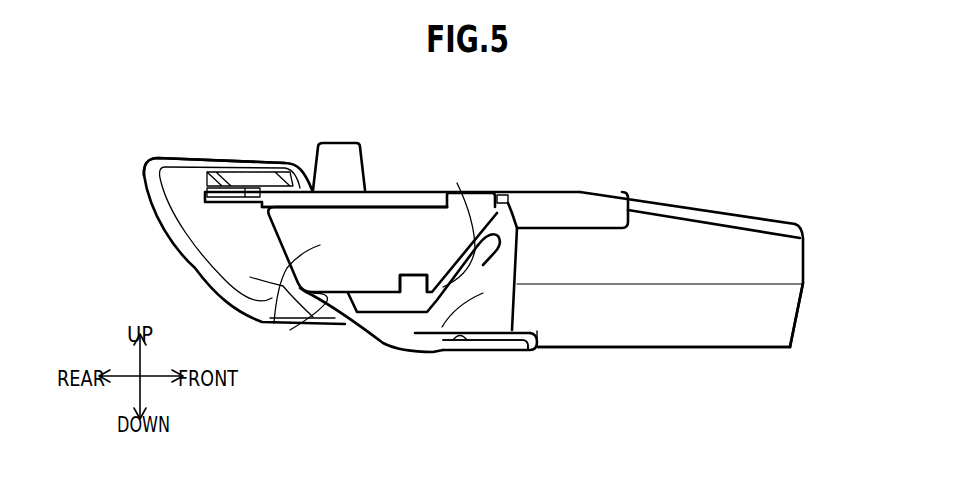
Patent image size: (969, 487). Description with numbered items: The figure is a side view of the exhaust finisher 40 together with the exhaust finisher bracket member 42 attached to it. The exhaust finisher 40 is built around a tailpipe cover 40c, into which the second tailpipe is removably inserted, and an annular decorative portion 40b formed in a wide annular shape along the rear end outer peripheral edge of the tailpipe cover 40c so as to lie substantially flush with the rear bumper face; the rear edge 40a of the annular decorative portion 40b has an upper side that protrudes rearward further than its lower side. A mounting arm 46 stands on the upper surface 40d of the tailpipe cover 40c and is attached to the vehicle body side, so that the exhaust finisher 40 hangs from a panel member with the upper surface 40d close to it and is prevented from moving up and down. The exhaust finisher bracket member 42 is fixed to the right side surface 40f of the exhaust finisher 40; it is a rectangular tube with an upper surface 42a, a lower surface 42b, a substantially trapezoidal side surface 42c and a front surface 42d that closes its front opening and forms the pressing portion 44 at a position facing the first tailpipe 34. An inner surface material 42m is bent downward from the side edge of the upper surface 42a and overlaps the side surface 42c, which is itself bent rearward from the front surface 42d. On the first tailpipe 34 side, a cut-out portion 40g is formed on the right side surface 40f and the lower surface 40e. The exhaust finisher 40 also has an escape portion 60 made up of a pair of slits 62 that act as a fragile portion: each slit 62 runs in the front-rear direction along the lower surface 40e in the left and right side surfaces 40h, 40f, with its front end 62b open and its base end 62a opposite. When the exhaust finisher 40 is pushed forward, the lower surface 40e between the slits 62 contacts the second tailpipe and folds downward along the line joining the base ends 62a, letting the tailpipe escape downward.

The first tailpipe 34 is at (382, 343).
The exhaust finisher 40 is at (749, 202).
The rear edge 40a is at (140, 174).
The annular decorative portion 40b is at (172, 249).
The tailpipe cover 40c is at (583, 190).
The upper surface 40d is at (668, 203).
The lower surface 40e is at (500, 357).
The right side surface 40f is at (443, 351).
The cut-out portion 40g is at (797, 352).
The left side surface 40h is at (701, 324).
The exhaust finisher bracket member 42 is at (425, 187).
The upper surface 42a is at (497, 195).
The lower surface 42b is at (291, 313).
The side surface 42c is at (276, 318).
The front surface 42d is at (511, 193).
The inner surface material 42m is at (382, 195).
The pressing portion 44 is at (468, 207).
The mounting arm 46 is at (338, 152).
The escape portion 60 is at (455, 366).
The slit 62 is at (470, 350).
The base end 62a is at (407, 333).
The front end 62b is at (537, 331).